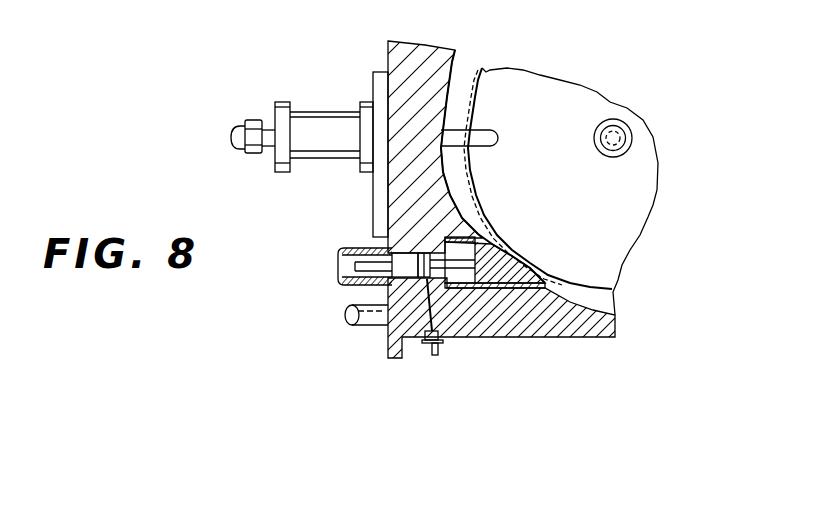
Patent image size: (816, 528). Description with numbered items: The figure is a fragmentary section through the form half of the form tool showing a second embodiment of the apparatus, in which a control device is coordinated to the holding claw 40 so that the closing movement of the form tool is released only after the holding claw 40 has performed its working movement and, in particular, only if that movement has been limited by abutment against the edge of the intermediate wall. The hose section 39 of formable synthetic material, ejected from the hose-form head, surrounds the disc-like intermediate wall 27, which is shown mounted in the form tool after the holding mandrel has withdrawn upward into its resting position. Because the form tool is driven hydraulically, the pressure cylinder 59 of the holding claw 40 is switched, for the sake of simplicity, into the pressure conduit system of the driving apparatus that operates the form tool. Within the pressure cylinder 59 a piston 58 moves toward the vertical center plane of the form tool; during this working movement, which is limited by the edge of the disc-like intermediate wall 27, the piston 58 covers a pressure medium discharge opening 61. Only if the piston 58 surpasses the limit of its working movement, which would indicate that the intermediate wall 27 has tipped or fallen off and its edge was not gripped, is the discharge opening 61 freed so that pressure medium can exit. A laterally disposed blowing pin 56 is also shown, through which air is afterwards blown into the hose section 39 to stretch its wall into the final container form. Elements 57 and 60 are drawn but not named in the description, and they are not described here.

The disc-like intermediate wall 27 is at (628, 205).
The hose section 39 is at (490, 208).
The holding claw 40 is at (510, 260).
The blowing pin 56 is at (322, 127).
The frame body 57 is at (463, 280).
The piston 58 is at (407, 273).
The pressure cylinder 59 is at (385, 290).
The fitting 60 is at (345, 282).
The pressure medium discharge opening 61 is at (437, 313).